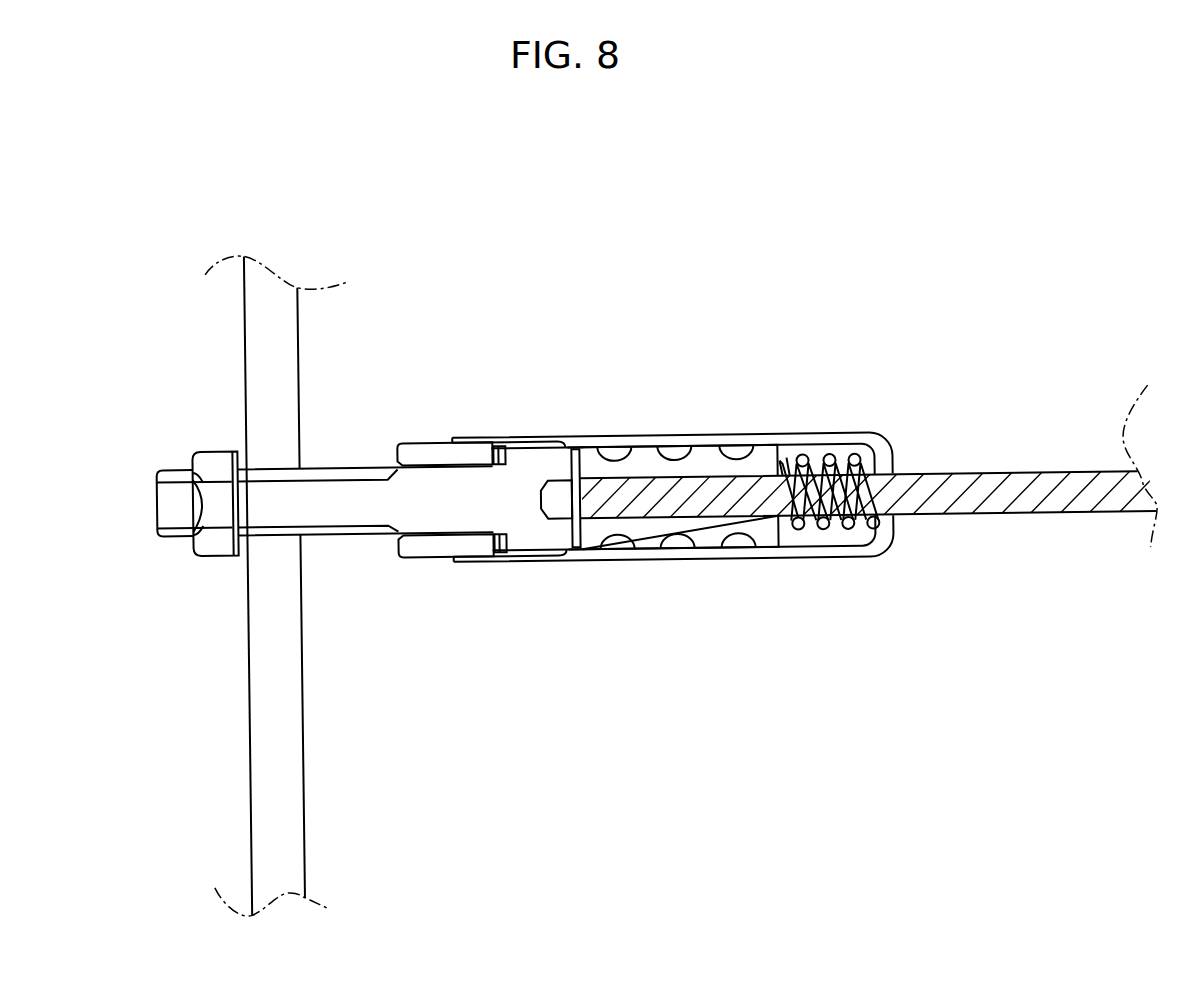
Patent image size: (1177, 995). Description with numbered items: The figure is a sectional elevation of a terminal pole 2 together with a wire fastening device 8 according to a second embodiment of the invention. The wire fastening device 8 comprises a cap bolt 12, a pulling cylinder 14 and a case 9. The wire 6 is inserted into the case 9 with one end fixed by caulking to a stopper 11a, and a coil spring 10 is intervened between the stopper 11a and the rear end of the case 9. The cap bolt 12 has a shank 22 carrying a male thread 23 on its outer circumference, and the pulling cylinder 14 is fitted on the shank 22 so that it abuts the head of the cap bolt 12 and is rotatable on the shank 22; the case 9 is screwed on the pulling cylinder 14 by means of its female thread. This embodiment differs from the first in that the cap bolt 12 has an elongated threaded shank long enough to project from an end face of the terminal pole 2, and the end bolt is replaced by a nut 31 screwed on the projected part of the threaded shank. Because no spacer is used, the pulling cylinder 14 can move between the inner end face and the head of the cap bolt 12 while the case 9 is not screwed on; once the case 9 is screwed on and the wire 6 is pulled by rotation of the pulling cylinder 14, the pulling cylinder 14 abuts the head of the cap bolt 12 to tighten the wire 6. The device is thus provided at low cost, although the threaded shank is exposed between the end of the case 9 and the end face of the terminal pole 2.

The terminal pole 2 is at (247, 358).
The wire 6 is at (991, 483).
The wire fastening device 8 is at (654, 309).
The case 9 is at (804, 438).
The coil spring 10 is at (813, 538).
The stopper 11a is at (704, 468).
The cap bolt 12 is at (531, 537).
The pulling cylinder 14 is at (432, 455).
The shank 22 is at (345, 504).
The male thread 23 is at (346, 465).
The nut 31 is at (207, 546).